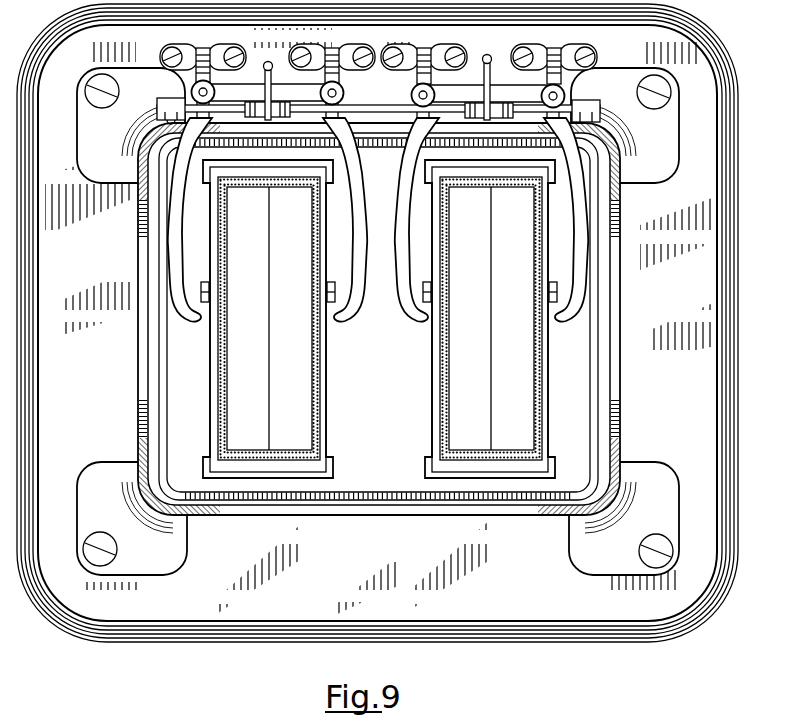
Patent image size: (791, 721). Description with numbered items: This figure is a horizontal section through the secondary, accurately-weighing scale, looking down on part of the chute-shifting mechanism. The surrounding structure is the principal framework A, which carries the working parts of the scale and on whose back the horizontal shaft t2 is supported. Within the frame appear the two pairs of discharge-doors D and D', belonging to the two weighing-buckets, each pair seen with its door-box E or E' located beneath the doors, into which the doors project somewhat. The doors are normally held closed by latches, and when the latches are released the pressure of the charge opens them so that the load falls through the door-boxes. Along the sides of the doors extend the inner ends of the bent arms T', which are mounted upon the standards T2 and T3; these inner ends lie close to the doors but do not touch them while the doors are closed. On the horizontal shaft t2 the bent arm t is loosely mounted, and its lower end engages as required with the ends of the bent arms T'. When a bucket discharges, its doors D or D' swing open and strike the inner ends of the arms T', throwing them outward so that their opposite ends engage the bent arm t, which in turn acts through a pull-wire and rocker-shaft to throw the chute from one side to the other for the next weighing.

The principal framework A is at (619, 312).
The bent arms T' is at (352, 211).
The standards T2 is at (424, 51).
The standards T3 is at (204, 49).
The bent arm t is at (271, 81).
The horizontal shaft t2 is at (366, 103).
The discharge-doors D is at (483, 318).
The discharge-doors D' is at (273, 318).
The door-box E is at (500, 319).
The door-box E' is at (280, 319).